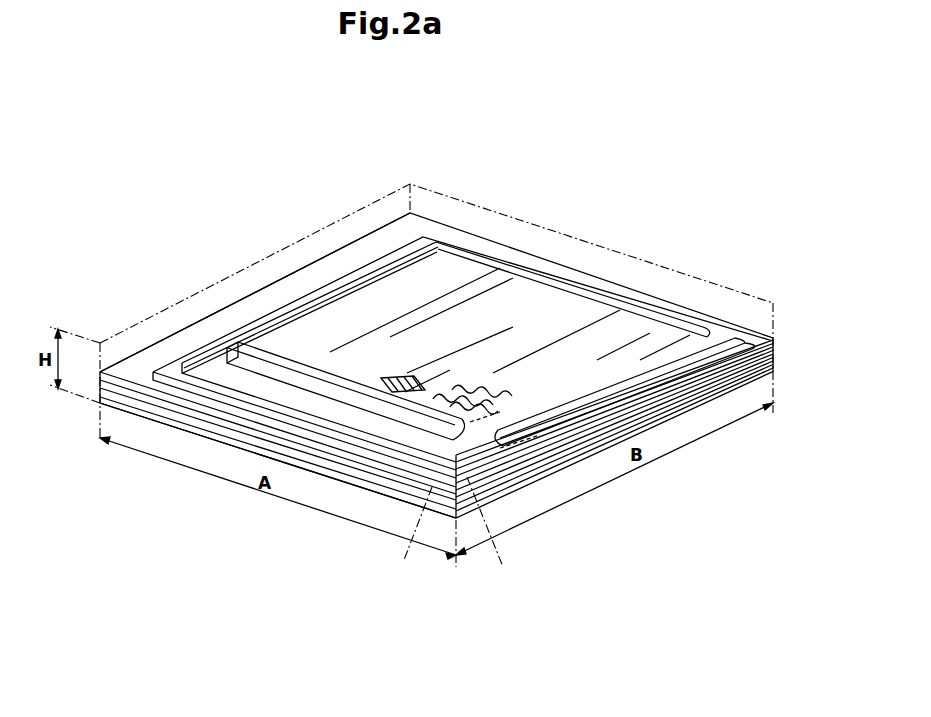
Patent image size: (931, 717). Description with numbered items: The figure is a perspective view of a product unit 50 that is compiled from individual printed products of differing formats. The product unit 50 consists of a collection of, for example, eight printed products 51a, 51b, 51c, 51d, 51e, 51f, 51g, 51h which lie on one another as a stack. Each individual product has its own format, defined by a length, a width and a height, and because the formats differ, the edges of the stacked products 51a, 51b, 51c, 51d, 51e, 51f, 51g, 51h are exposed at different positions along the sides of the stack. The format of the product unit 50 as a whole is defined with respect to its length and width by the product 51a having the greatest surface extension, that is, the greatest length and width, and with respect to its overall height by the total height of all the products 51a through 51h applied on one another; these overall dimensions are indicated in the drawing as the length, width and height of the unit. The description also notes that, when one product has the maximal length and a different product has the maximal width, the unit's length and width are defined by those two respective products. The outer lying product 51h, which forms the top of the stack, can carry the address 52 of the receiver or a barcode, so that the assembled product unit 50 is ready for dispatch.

The product unit 50 is at (215, 438).
The printed product 51a is at (363, 484).
The printed product 51b is at (403, 490).
The printed product 51c is at (437, 494).
The printed product 51d is at (487, 498).
The printed product 51e is at (515, 490).
The printed product 51f is at (527, 487).
The printed product 51g is at (553, 468).
The outer lying printed product 51h is at (323, 353).
The address 52 is at (492, 398).